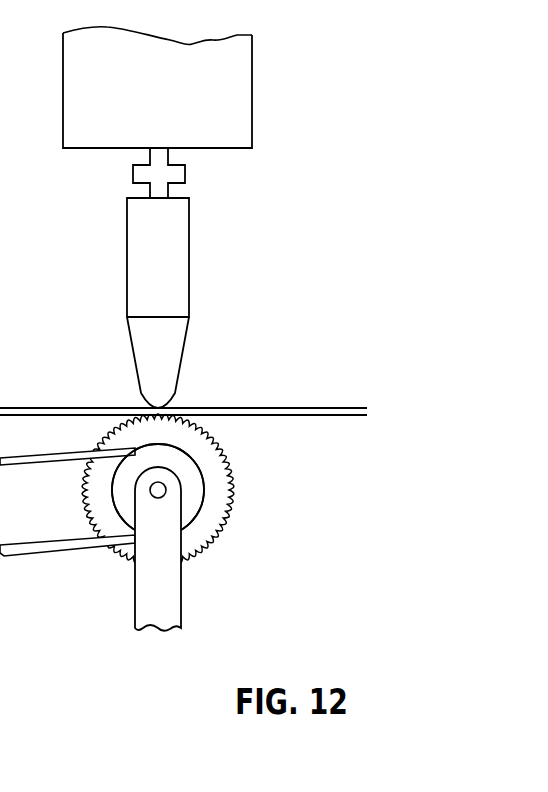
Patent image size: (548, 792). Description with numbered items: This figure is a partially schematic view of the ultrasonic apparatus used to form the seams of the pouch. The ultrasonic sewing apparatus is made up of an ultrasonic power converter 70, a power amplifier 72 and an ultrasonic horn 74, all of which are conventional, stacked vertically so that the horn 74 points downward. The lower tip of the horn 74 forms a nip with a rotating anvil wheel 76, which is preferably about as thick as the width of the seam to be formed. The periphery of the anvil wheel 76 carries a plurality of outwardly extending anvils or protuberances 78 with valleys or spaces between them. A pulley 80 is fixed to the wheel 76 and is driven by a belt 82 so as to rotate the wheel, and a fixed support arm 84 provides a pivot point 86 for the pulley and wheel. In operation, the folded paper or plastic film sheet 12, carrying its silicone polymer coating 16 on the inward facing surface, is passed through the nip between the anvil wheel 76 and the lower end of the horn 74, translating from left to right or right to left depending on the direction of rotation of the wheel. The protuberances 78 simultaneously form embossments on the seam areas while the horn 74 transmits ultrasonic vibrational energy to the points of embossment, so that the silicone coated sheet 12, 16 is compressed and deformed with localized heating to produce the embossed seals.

The ultrasonic power converter 70 is at (180, 101).
The power amplifier 72 is at (177, 173).
The ultrasonic horn 74 is at (178, 268).
The paper sheet or plastic film sheet 12 is at (283, 407).
The silicone polymer coating 16 is at (273, 417).
The anvil wheel 76 is at (213, 500).
The anvils or protuberances 78 is at (230, 461).
The pulley 80 is at (122, 497).
The belt 82 is at (40, 463).
The support arm 84 is at (172, 602).
The pivot point 86 is at (158, 498).